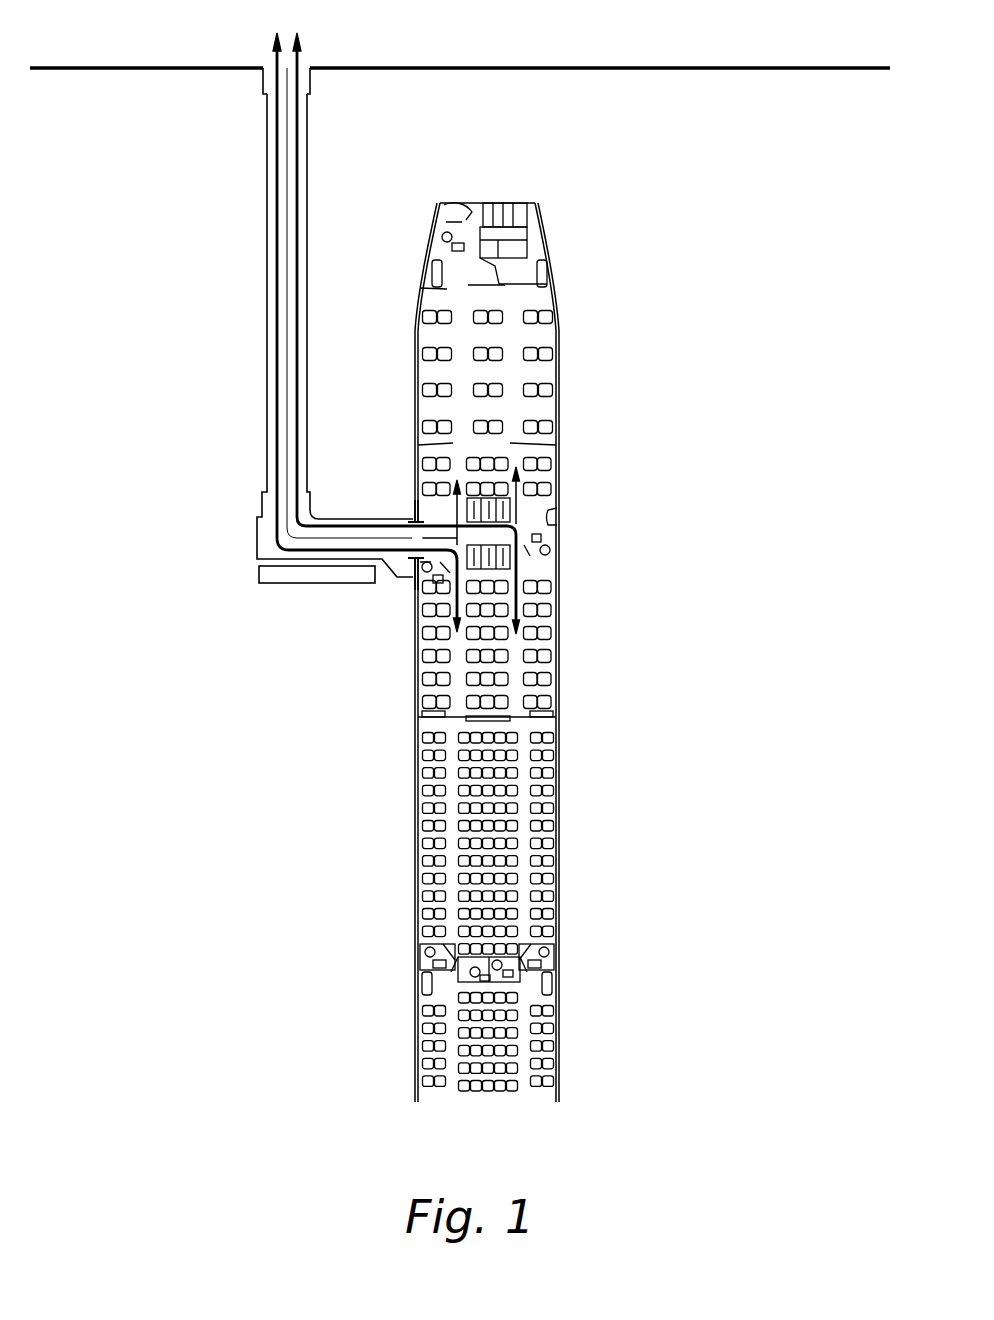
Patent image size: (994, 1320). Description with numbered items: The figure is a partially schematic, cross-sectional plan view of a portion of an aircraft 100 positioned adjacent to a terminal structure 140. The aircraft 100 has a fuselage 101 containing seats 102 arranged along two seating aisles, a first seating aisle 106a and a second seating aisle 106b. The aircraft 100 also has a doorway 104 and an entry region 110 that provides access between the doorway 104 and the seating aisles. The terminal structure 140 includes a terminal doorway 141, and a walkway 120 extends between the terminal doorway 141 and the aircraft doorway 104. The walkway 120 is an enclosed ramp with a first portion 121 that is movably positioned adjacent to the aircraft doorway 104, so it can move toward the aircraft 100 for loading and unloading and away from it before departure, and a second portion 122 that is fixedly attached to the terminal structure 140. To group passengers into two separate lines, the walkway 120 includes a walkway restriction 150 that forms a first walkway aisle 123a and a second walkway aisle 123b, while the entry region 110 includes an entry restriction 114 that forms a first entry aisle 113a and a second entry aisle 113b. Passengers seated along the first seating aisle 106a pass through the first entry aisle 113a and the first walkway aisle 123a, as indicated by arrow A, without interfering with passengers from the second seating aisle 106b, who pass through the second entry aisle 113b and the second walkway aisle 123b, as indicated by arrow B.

The aircraft 100 is at (634, 856).
The fuselage 101 is at (558, 458).
The seats 102 is at (425, 676).
The doorway 104 is at (409, 519).
The first seating aisle 106a is at (458, 699).
The second seating aisle 106b is at (517, 700).
The entry region 110 is at (445, 510).
The first entry aisle 113a is at (421, 581).
The second entry aisle 113b is at (428, 524).
The entry restriction 114 is at (433, 538).
The walkway 120 is at (300, 348).
The first portion 121 is at (388, 577).
The second portion 122 is at (248, 105).
The first walkway aisle 123a is at (272, 332).
The second walkway aisle 123b is at (300, 175).
The terminal structure 140 is at (565, 70).
The terminal doorway 141 is at (307, 66).
The walkway restriction 150 is at (288, 263).
The arrow A is at (276, 396).
The arrow B is at (298, 288).